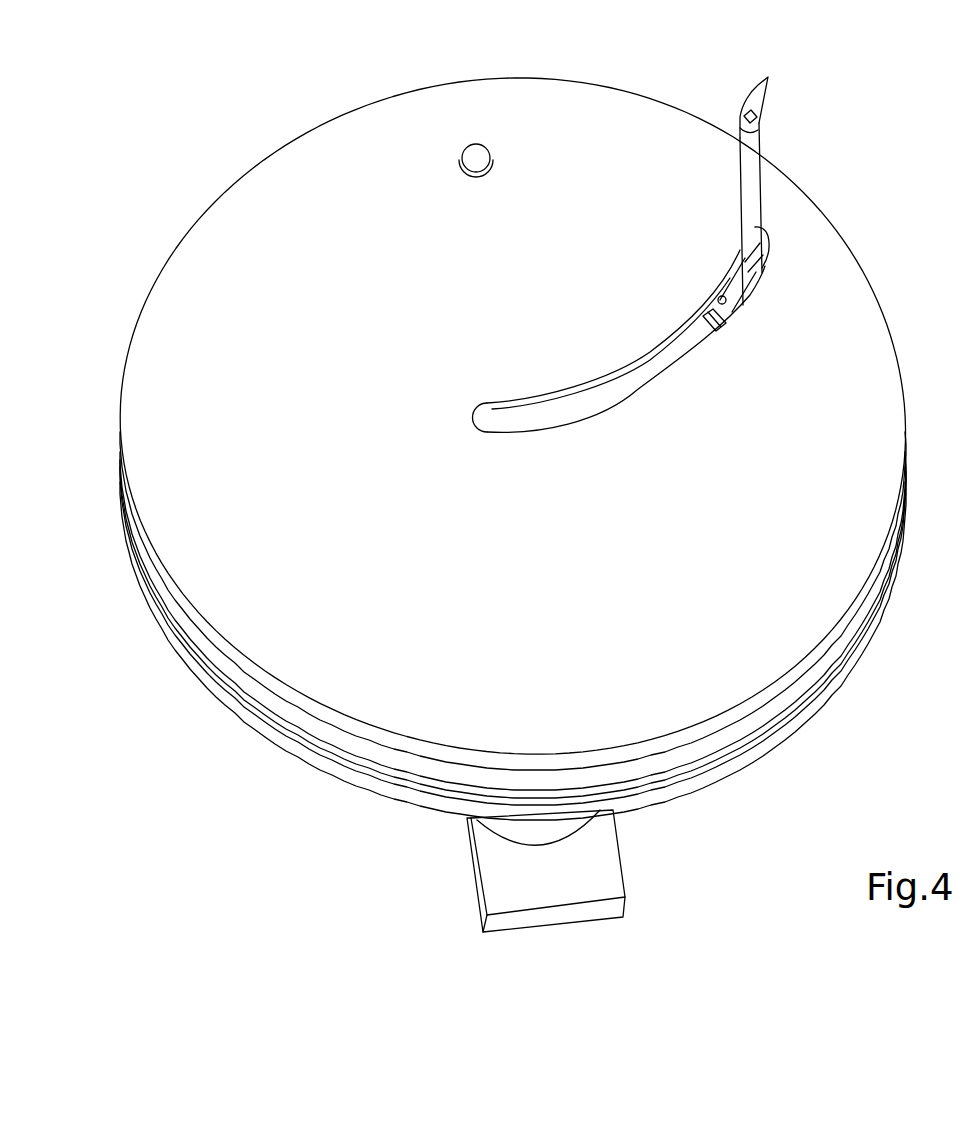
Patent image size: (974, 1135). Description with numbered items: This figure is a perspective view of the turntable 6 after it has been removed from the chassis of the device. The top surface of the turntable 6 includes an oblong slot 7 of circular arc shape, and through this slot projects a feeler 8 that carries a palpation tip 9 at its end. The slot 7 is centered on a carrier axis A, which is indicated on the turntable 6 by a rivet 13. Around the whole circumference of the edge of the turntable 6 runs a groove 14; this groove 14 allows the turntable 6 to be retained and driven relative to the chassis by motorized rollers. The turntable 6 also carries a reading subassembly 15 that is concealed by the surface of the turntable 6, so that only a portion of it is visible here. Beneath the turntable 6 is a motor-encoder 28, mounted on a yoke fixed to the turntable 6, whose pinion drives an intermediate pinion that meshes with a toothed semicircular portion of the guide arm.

The turntable 6 is at (848, 317).
The oblong slot 7 is at (523, 416).
The feeler 8 is at (750, 196).
The palpation tip 9 is at (760, 93).
The rivet 13 is at (473, 157).
The groove 14 is at (810, 657).
The reading subassembly 15 is at (557, 863).
The motor-encoder 28 is at (495, 880).